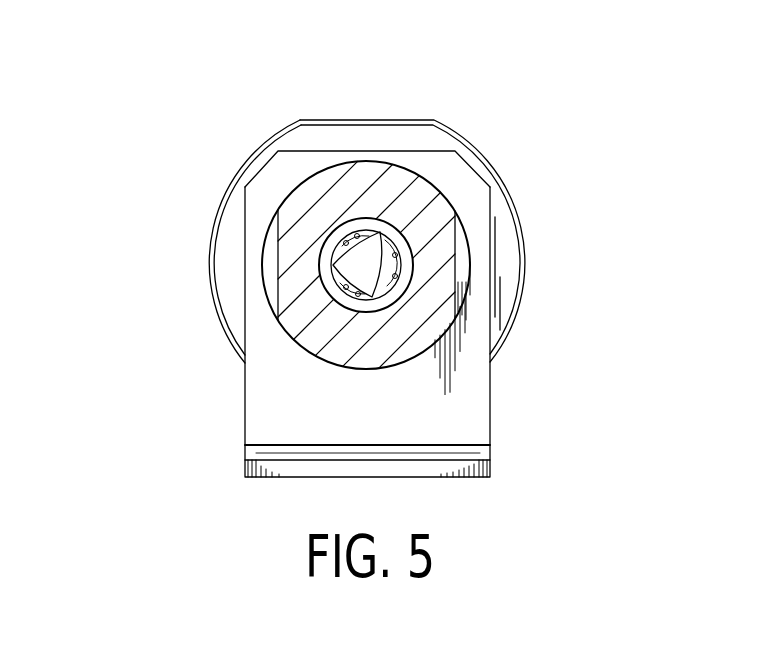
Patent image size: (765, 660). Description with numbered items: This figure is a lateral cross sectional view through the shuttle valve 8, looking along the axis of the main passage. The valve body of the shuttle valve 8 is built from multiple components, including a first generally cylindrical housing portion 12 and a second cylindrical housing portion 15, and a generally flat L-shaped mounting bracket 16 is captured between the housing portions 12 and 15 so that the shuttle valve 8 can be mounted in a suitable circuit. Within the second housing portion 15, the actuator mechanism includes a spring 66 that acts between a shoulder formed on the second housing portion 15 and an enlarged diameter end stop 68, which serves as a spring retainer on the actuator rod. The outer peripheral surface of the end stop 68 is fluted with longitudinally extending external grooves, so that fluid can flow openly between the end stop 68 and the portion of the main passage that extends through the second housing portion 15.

The shuttle valve 8 is at (182, 353).
The first housing portion 12 is at (360, 135).
The second housing portion 15 is at (440, 207).
The mounting bracket 16 is at (385, 421).
The spring 66 is at (341, 233).
The end stop 68 is at (381, 230).